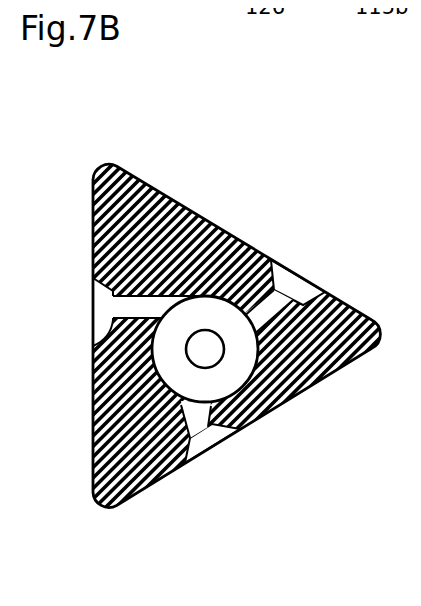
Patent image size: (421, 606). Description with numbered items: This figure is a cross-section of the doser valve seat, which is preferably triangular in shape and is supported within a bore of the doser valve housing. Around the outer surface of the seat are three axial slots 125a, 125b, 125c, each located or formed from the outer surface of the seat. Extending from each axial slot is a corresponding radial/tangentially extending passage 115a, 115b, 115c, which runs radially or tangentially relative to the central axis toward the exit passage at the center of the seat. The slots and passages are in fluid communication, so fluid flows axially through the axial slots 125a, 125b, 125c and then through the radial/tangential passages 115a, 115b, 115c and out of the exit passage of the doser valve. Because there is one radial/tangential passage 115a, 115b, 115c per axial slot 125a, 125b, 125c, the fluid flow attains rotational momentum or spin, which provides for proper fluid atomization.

The radial/tangentially extending passage 115a is at (132, 297).
The axial slot 125a is at (95, 308).
The radial/tangentially extending passage 115b is at (270, 305).
The axial slot 125b is at (280, 283).
The radial/tangentially extending passage 115c is at (185, 410).
The axial slot 125c is at (198, 432).